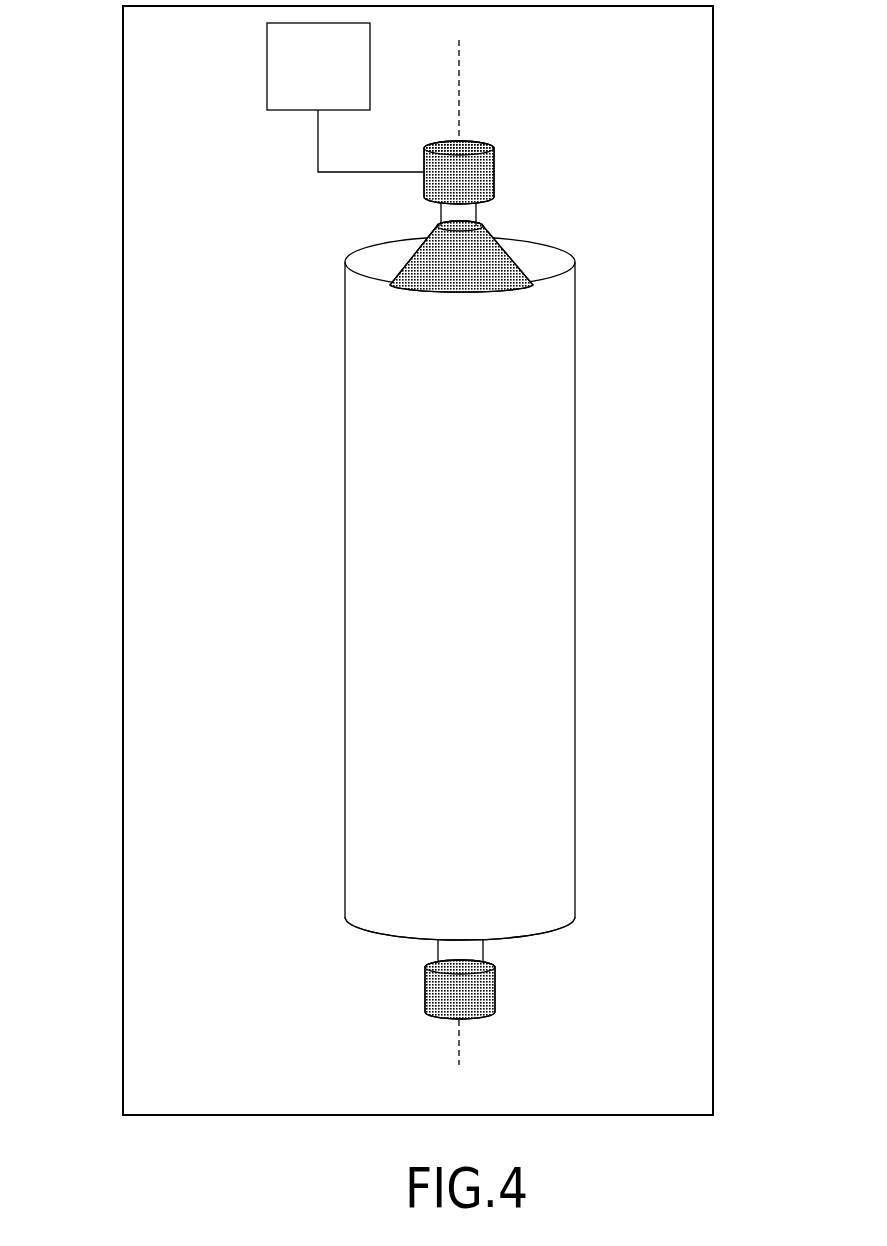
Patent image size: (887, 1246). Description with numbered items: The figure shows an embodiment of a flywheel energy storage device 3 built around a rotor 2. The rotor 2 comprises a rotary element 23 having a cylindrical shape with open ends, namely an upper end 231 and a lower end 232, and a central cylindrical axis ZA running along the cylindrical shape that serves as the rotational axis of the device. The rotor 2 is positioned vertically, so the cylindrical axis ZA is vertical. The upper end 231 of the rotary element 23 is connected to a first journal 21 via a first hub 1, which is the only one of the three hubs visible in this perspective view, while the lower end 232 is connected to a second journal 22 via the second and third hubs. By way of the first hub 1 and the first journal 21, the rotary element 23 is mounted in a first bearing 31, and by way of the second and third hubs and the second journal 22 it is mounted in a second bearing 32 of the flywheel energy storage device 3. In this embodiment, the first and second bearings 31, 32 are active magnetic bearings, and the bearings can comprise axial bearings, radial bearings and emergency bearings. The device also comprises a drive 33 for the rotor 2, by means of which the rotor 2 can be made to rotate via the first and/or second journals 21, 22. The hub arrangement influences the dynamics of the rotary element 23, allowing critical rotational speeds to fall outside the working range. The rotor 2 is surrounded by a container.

The hub 1 is at (404, 262).
The rotor 2 is at (525, 618).
The flywheel energy storage device 3 is at (121, 290).
The first journal 21 is at (461, 212).
The second journal 22 is at (468, 948).
The rotary element 23 is at (472, 577).
The upper end 231 is at (546, 259).
The lower end 232 is at (395, 942).
The first bearing 31 is at (498, 172).
The second bearing 32 is at (498, 990).
The drive 33 is at (332, 85).
The cylindrical axis ZA is at (463, 75).